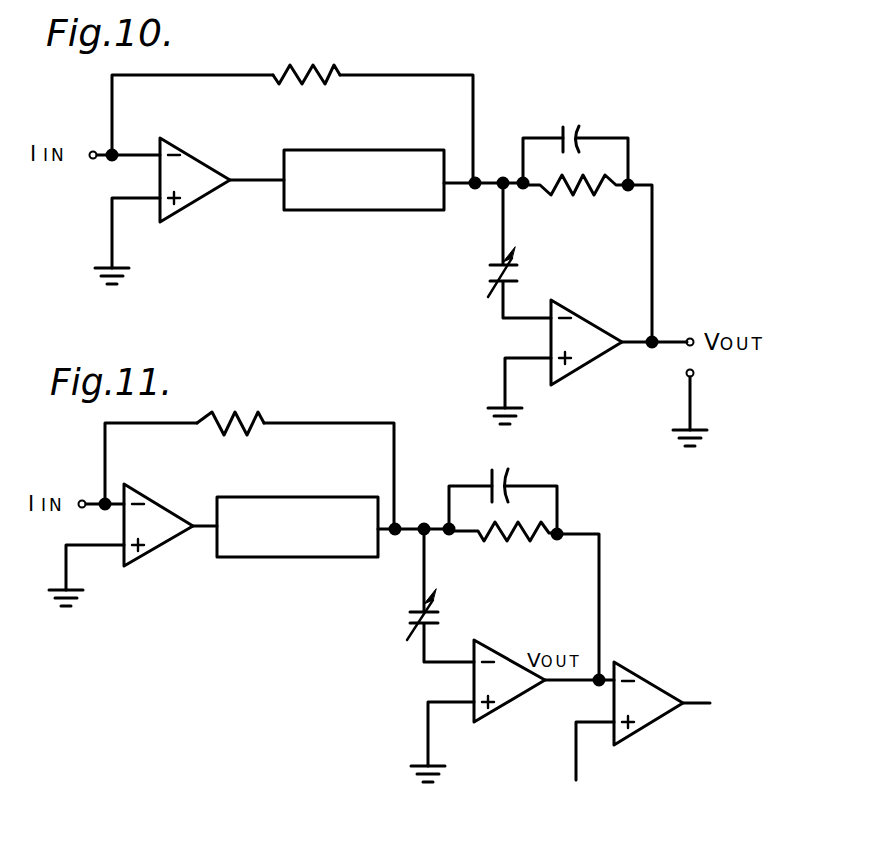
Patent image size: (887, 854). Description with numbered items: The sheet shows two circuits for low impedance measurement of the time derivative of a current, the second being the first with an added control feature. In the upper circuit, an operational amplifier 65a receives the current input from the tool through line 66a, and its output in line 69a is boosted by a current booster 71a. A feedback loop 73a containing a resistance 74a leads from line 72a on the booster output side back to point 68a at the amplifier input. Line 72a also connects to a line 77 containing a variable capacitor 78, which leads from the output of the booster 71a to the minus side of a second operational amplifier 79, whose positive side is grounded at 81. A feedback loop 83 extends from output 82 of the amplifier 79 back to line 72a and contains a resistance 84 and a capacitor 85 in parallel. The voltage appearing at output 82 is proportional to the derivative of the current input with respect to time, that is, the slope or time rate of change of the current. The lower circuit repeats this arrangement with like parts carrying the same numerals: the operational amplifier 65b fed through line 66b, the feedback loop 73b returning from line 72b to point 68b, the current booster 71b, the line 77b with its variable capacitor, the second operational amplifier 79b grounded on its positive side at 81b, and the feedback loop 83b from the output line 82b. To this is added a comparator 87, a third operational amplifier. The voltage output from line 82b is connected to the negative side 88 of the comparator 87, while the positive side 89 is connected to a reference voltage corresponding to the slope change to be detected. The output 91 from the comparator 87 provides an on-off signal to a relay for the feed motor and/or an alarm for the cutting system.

In FIG. 10, the operational amplifier 65a is at (205, 163).
In FIG. 10, the line 66a is at (102, 163).
In FIG. 10, the point 68a is at (116, 150).
In FIG. 10, the line 69a is at (246, 190).
In FIG. 10, the current booster 71a is at (334, 212).
In FIG. 10, the line 72a is at (463, 190).
In FIG. 10, the feedback loop 73a is at (440, 52).
In FIG. 10, the resistance 74a is at (304, 62).
In FIG. 10, the line 77 is at (500, 305).
In FIG. 10, the variable capacitor 78 is at (528, 265).
In FIG. 10, the second operational amplifier 79 is at (596, 335).
In FIG. 10, the ground 81 is at (493, 402).
In FIG. 10, the output 82 is at (637, 348).
In FIG. 10, the feedback loop 83 is at (655, 258).
In FIG. 10, the resistance 84 is at (573, 190).
In FIG. 10, the capacitor 85 is at (575, 125).
In FIG. 11, the operational amplifier 65b is at (165, 512).
In FIG. 11, the line 66b is at (88, 500).
In FIG. 11, the point 68b is at (116, 500).
In FIG. 11, the current booster 71b is at (280, 560).
In FIG. 11, the line 72b is at (406, 525).
In FIG. 11, the feedback loop 73b is at (342, 400).
In FIG. 11, the line 77b is at (420, 583).
In FIG. 11, the second operational amplifier 79b is at (500, 665).
In FIG. 11, the ground 81b is at (428, 730).
In FIG. 11, the line 82b is at (558, 684).
In FIG. 11, the feedback loop 83b is at (603, 572).
In FIG. 11, the comparator 87 is at (650, 695).
In FIG. 11, the negative side 88 is at (603, 676).
In FIG. 11, the positive side 89 is at (576, 758).
In FIG. 11, the output 91 is at (712, 703).